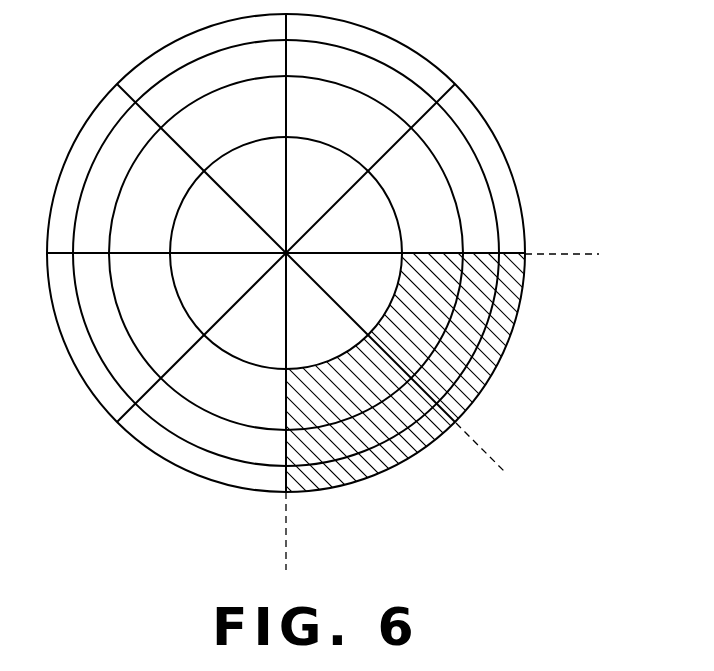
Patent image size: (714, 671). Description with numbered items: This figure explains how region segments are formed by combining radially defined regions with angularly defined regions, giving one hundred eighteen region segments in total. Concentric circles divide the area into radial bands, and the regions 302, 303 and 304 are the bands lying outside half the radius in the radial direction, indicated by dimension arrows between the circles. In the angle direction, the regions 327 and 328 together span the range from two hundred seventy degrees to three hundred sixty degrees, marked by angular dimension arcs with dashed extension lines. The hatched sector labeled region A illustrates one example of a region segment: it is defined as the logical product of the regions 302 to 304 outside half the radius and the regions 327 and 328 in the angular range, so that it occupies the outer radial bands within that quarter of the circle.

The region 302 is at (382, 188).
The region 303 is at (449, 184).
The region 304 is at (495, 212).
The region 327 is at (495, 462).
The region 328 is at (582, 253).
The region A is at (283, 448).